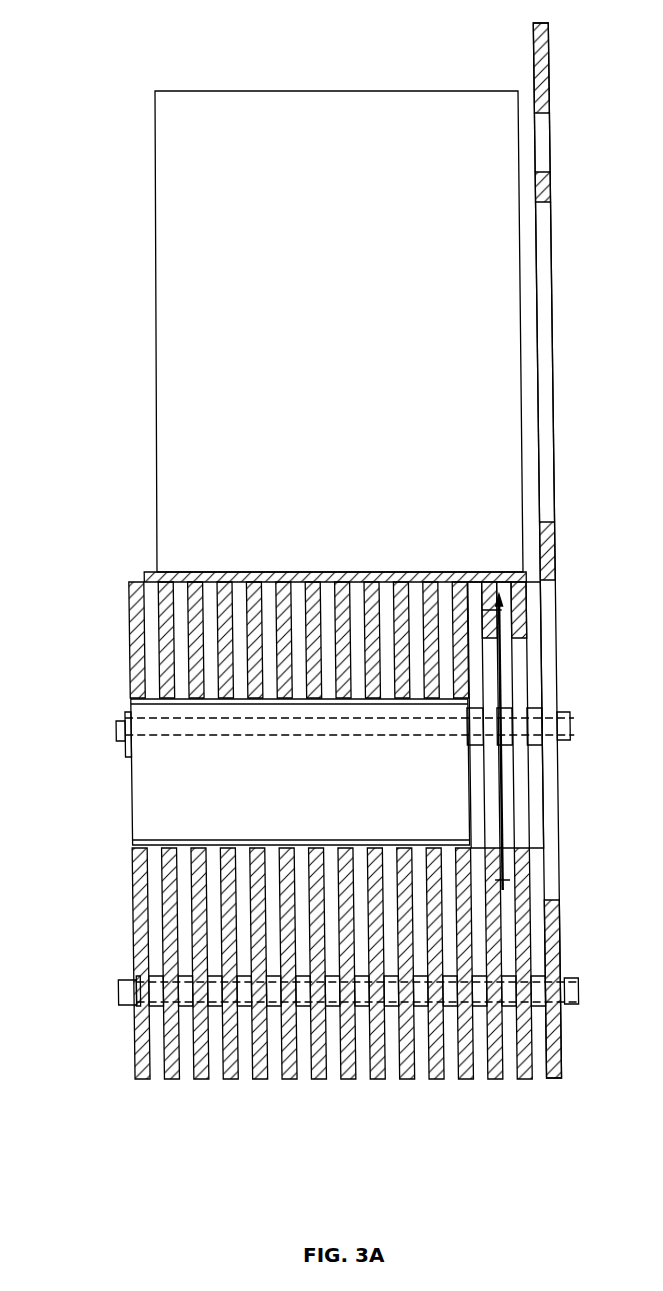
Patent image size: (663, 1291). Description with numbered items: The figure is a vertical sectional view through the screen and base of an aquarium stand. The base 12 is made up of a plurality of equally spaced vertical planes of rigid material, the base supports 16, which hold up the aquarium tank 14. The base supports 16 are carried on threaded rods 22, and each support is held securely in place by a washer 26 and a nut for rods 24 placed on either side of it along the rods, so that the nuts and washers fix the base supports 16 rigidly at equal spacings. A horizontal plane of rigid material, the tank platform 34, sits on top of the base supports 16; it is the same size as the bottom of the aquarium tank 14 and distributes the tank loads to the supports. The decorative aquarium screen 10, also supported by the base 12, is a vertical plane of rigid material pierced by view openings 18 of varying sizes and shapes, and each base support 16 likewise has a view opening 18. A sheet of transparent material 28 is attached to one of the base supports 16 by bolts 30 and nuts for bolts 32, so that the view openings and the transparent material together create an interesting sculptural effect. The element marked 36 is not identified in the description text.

The aquarium screen 10 is at (549, 47).
The base 12 is at (205, 1085).
The aquarium tank 14 is at (156, 252).
The base supports 16 is at (345, 1080).
The view openings 18 is at (540, 137).
The threaded rods 22 is at (121, 996).
The nuts for rods 24 is at (140, 1006).
The washers 26 is at (140, 972).
The sheet of transparent material 28 is at (505, 807).
The bolts 30 is at (482, 881).
The nuts for bolts 32 is at (483, 882).
The tank platform 34 is at (143, 580).
The base block 36 is at (347, 800).